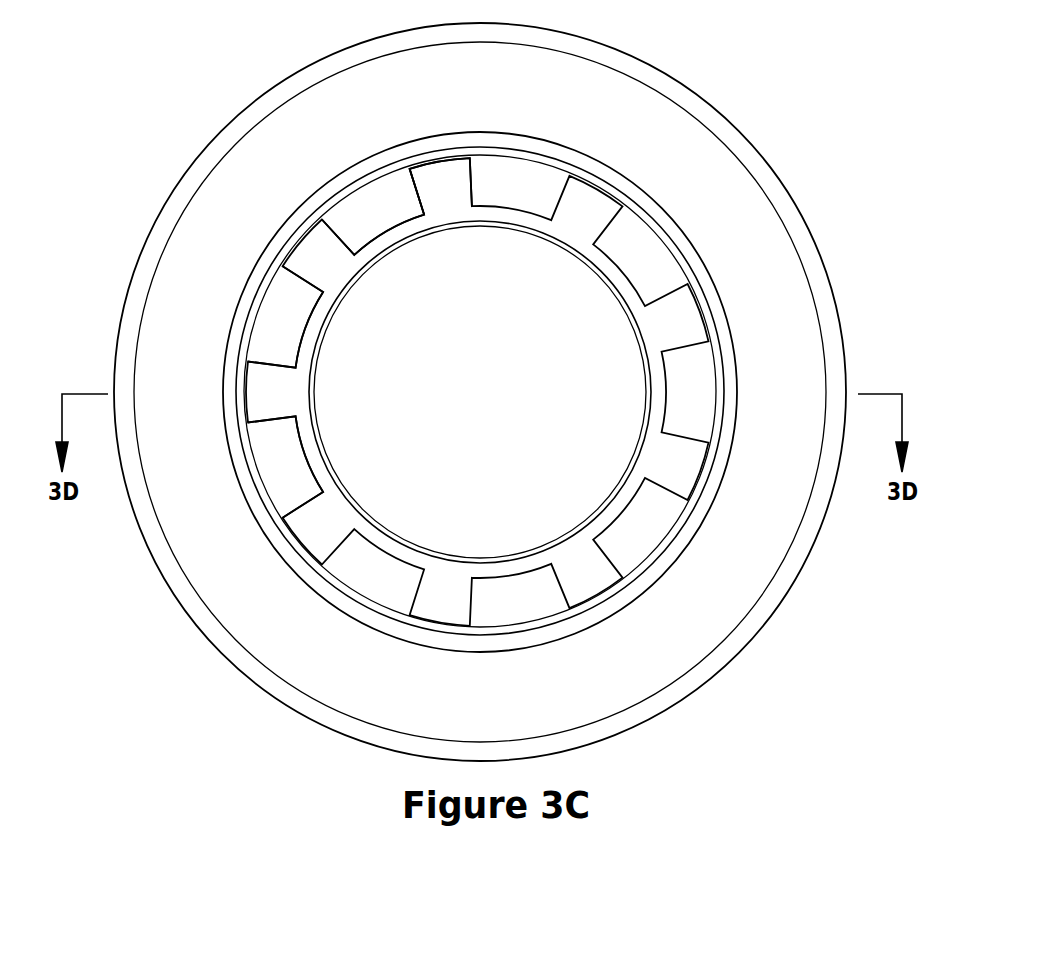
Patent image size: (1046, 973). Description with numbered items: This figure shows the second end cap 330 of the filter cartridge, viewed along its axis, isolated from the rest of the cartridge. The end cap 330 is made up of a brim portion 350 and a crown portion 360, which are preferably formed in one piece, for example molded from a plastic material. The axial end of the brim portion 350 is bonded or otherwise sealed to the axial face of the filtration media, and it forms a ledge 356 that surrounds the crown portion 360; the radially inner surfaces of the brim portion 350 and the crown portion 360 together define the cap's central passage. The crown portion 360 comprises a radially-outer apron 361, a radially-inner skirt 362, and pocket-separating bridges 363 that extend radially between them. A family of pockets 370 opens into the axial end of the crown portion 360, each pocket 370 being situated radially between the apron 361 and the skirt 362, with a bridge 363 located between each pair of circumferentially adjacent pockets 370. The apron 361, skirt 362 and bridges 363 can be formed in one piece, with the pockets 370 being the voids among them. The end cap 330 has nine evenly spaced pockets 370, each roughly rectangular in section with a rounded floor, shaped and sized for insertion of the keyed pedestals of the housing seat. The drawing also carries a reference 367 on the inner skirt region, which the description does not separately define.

The second end cap 330 is at (692, 73).
The brim portion 350 is at (703, 200).
The ledge 356 is at (705, 598).
The crown portion 360 is at (512, 583).
The radially-outer apron 361 is at (723, 297).
The radially-inner skirt 362 is at (400, 540).
The pocket-separating bridge 363 is at (445, 190).
The bore ring 367 is at (613, 515).
The pocket 370 is at (372, 208).